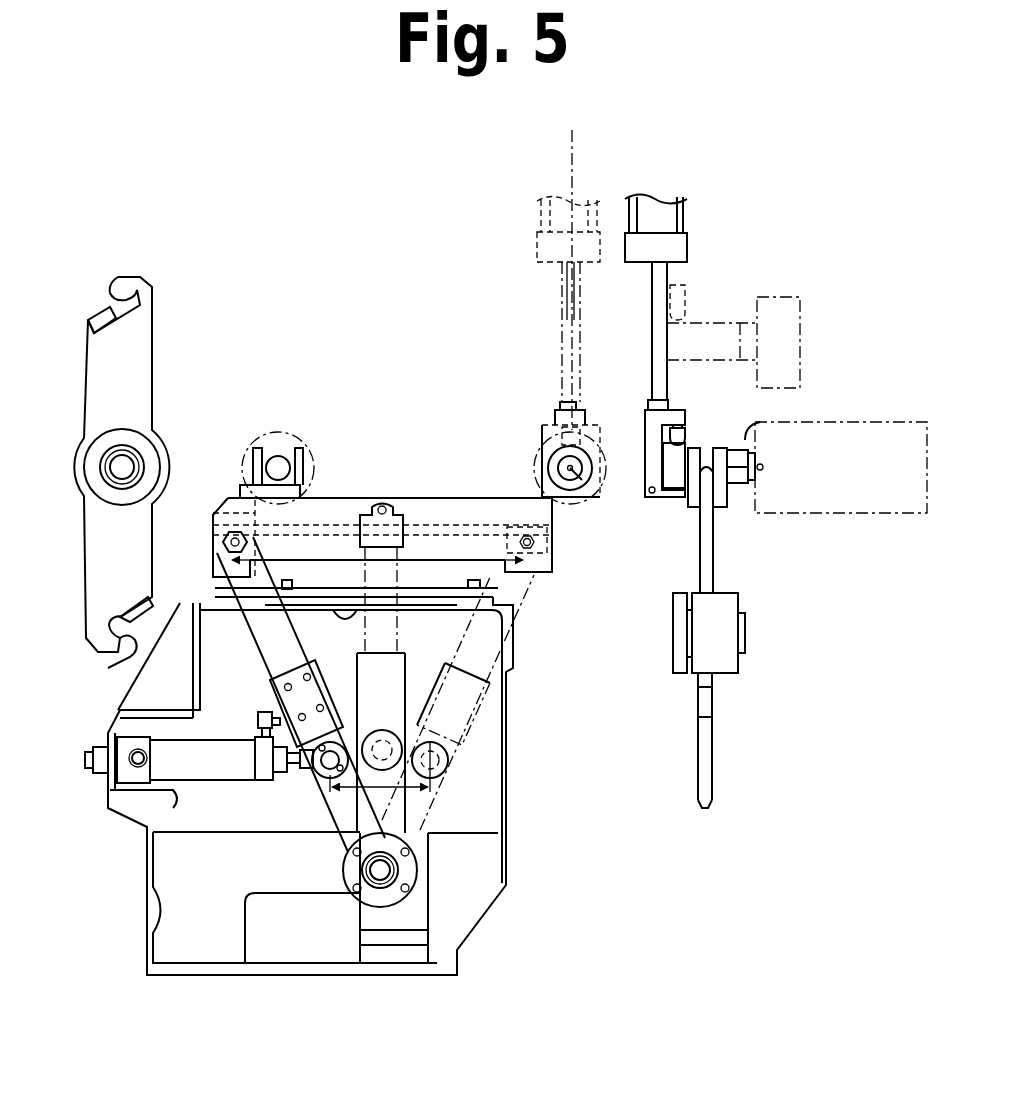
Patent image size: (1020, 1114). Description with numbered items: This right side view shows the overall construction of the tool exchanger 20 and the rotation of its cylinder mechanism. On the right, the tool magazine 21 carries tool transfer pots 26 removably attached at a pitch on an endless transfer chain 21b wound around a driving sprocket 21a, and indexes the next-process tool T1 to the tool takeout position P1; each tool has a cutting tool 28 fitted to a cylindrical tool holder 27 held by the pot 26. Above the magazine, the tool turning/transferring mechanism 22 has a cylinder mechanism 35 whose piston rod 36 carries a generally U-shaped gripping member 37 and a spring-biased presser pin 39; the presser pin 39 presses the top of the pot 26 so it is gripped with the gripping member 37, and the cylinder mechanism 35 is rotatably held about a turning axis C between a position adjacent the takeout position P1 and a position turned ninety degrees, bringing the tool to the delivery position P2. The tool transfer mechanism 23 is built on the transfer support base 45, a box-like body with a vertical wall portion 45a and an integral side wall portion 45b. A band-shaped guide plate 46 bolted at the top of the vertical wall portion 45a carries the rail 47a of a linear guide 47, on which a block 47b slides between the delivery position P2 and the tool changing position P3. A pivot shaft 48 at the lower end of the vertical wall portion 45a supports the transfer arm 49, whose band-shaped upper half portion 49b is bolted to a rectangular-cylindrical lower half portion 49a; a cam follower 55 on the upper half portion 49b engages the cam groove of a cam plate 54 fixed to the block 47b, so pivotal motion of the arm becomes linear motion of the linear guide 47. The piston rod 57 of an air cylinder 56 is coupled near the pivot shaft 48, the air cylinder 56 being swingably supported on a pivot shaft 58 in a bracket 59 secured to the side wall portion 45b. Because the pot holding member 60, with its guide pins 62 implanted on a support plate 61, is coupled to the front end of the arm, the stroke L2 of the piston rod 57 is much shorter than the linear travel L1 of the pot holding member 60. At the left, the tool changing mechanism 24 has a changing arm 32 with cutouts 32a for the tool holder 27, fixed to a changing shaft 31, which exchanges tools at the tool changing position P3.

The tool exchanger 20 is at (435, 270).
The tool magazine 21 is at (768, 643).
The driving sprocket 21a is at (717, 732).
The endless transfer chain 21b is at (738, 505).
The tool turning/transferring mechanism 22 is at (793, 277).
The tool transfer mechanism 23 is at (385, 380).
The tool changing mechanism 24 is at (173, 265).
The tool transfer pot 26 is at (585, 482).
The tool holder 27 is at (748, 422).
The cutting tool 28 is at (853, 422).
The changing shaft 31 is at (140, 450).
The changing arm 32 is at (157, 363).
The cutouts 32a is at (112, 290).
The cylinder mechanism 35 is at (530, 222).
The piston rod 36 is at (560, 342).
The gripping member 37 is at (657, 503).
The presser pin 39 is at (558, 410).
The transfer support base 45 is at (515, 847).
The vertical wall portion 45a is at (483, 783).
The side wall portion 45b is at (217, 613).
The guide plate 46 is at (539, 576).
The linear guide 47 is at (500, 456).
The rail 47a is at (458, 522).
The block 47b is at (216, 513).
The pivot shaft 48 is at (397, 868).
The transfer arm 49 is at (486, 610).
The lower half portion 49a is at (325, 810).
The upper half portion 49b is at (253, 627).
The cam plate 54 is at (222, 572).
The cam follower 55 is at (222, 540).
The air cylinder 56 is at (212, 783).
The piston rod 57 is at (293, 773).
The pivot shaft 58 is at (136, 758).
The bracket 59 is at (133, 783).
The pot holding member 60 is at (288, 428).
The support plate 61 is at (403, 513).
The guide pins 62 is at (255, 458).
The turning axis C is at (573, 165).
The tool takeout position P1 is at (762, 467).
The delivery position P2 is at (583, 481).
The tool changing position P3 is at (276, 465).
The next-process tool T1 is at (640, 495).
The amount of linear travel L1 is at (313, 553).
The length of stroke L2 is at (408, 790).